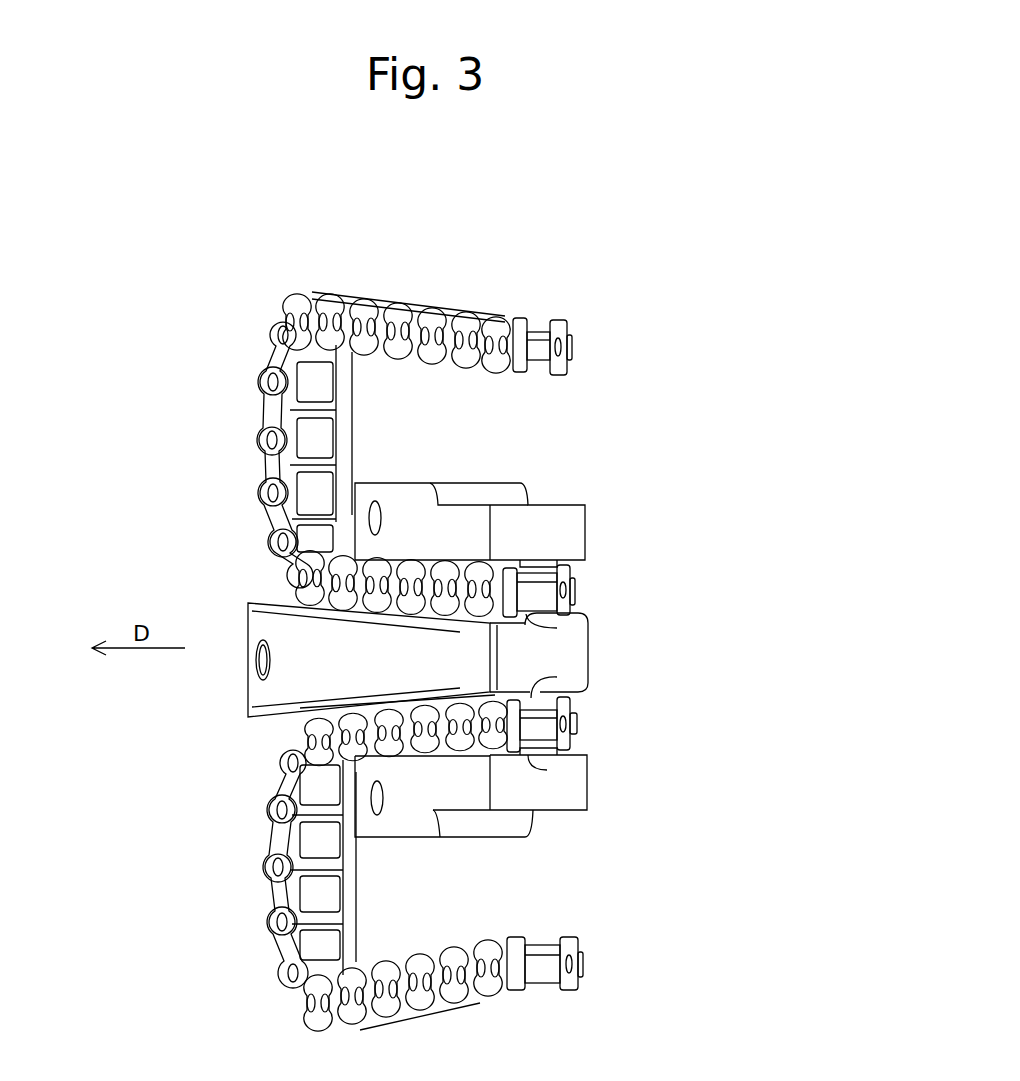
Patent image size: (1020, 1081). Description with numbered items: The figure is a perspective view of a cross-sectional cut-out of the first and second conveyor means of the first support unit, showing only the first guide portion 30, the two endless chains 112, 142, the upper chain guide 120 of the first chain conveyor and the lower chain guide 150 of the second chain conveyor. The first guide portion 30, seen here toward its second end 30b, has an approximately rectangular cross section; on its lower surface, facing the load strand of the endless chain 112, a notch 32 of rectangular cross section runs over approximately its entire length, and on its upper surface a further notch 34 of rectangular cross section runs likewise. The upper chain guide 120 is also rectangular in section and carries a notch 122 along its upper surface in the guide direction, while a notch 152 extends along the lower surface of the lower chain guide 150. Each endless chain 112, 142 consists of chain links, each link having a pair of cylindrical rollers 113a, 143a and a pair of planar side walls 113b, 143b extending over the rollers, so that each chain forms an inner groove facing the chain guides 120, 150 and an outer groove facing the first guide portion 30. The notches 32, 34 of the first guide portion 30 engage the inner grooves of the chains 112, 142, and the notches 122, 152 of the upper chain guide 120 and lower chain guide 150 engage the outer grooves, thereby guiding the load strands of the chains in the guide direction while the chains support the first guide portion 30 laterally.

The first guide portion 30 is at (540, 657).
The second end 30b is at (285, 698).
The notch 32 is at (557, 677).
The further notch 34 is at (557, 628).
The endless chain 112 is at (285, 903).
The cylindrical rollers 113a is at (545, 968).
The planar side walls 113b is at (567, 938).
The upper chain guide 120 is at (485, 815).
The notch 122 is at (555, 754).
The endless chain 142 is at (268, 418).
The cylindrical rollers 143a is at (540, 345).
The planar side walls 143b is at (565, 327).
The lower chain guide 150 is at (465, 495).
The notch 152 is at (540, 558).